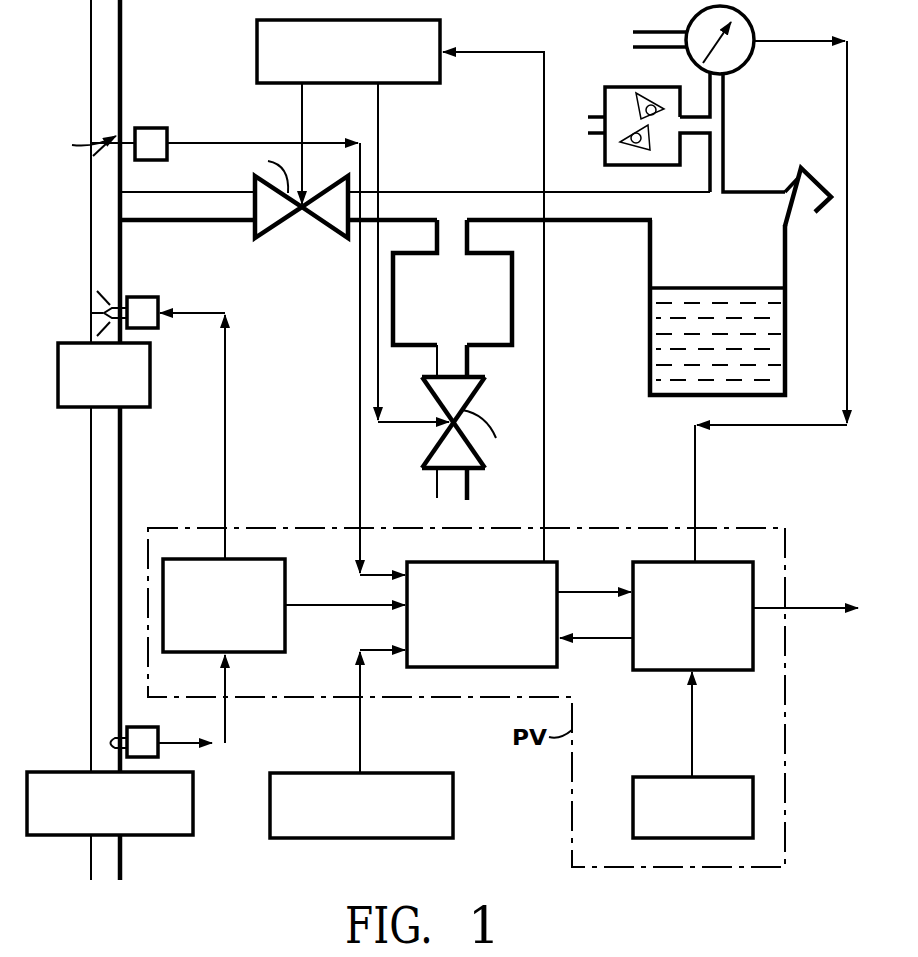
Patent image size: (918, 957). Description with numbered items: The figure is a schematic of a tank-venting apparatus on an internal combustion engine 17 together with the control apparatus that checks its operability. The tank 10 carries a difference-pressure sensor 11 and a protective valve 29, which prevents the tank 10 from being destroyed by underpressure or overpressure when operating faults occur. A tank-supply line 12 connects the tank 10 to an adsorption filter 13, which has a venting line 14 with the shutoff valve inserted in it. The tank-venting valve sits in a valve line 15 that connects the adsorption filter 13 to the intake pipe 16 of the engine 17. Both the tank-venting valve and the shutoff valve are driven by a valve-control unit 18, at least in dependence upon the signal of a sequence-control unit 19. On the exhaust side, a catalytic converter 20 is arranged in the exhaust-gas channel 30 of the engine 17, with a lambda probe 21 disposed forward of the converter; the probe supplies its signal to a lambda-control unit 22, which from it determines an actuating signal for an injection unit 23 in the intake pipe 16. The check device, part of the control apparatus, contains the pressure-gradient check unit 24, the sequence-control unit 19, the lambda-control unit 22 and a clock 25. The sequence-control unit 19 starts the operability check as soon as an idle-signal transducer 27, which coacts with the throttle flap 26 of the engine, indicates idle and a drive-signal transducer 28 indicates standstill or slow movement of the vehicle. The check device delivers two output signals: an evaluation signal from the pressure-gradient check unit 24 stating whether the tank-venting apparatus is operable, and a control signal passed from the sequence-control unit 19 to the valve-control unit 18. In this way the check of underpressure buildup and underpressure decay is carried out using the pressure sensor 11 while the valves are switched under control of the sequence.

The tank 10 is at (650, 360).
The difference-pressure sensor 11 is at (745, 68).
The tank-supply line 12 is at (617, 223).
The adsorption filter 13 is at (513, 308).
The venting line 14 is at (470, 362).
The valve line 15 is at (355, 228).
The intake pipe 16 is at (88, 195).
The internal combustion engine 17 is at (133, 408).
The valve-control unit 18 is at (257, 63).
The sequence-control unit 19 is at (560, 662).
The catalytic converter 20 is at (195, 810).
The lambda probe 21 is at (160, 752).
The lambda-control unit 22 is at (287, 632).
The injection unit 23 is at (141, 297).
The pressure-gradient check unit 24 is at (712, 672).
The clock 25 is at (653, 777).
The throttle flap 26 is at (80, 144).
The idle-signal transducer 27 is at (145, 128).
The drive-signal transducer 28 is at (453, 800).
The protective valve 29 is at (603, 145).
The exhaust-gas channel 30 is at (88, 668).